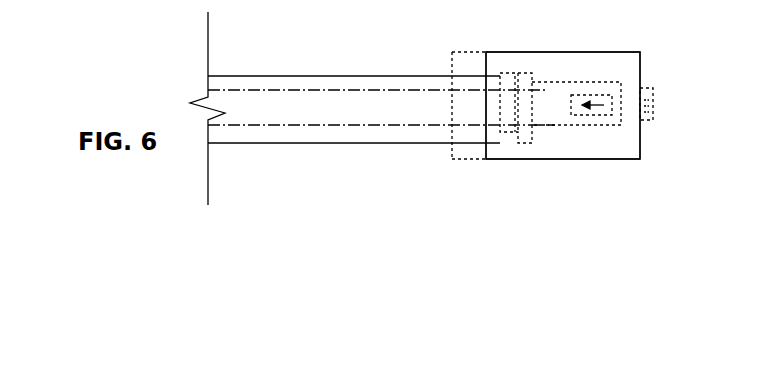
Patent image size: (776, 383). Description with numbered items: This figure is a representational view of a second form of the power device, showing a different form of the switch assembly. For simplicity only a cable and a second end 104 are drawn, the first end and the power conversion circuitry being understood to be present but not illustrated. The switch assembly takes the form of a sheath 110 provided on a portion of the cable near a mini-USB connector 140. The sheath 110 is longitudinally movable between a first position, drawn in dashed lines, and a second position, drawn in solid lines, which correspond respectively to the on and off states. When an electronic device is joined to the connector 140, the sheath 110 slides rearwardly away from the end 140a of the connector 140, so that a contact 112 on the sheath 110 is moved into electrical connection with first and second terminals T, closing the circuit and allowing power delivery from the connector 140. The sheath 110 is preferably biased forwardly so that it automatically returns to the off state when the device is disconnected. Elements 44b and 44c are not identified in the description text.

The upper layer of bar 44b is at (308, 80).
The lower layer of bar 44c is at (322, 125).
The second end 104 is at (655, 169).
The sheath 110 is at (452, 168).
The contact 112 is at (531, 95).
The terminals T is at (517, 80).
The mini-USB connector 140 is at (646, 75).
The end of the connector 140a is at (657, 110).